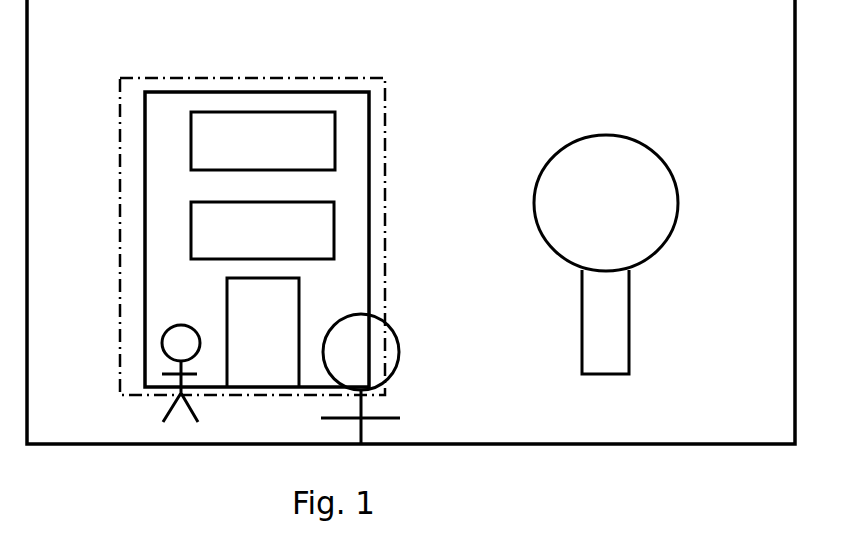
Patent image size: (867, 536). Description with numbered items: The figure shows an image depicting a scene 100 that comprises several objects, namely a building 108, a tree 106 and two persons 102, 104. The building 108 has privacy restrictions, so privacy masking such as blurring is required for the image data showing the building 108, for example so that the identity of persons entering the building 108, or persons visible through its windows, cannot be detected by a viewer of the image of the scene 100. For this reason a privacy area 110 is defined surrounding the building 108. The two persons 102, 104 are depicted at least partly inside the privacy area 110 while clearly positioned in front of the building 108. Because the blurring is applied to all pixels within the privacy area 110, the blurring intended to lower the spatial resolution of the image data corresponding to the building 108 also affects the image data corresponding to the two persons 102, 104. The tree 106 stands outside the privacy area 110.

The scene 100 is at (685, 444).
The person 102 is at (162, 418).
The person 104 is at (398, 367).
The tree 106 is at (663, 242).
The building 108 is at (290, 92).
The privacy area 110 is at (385, 200).